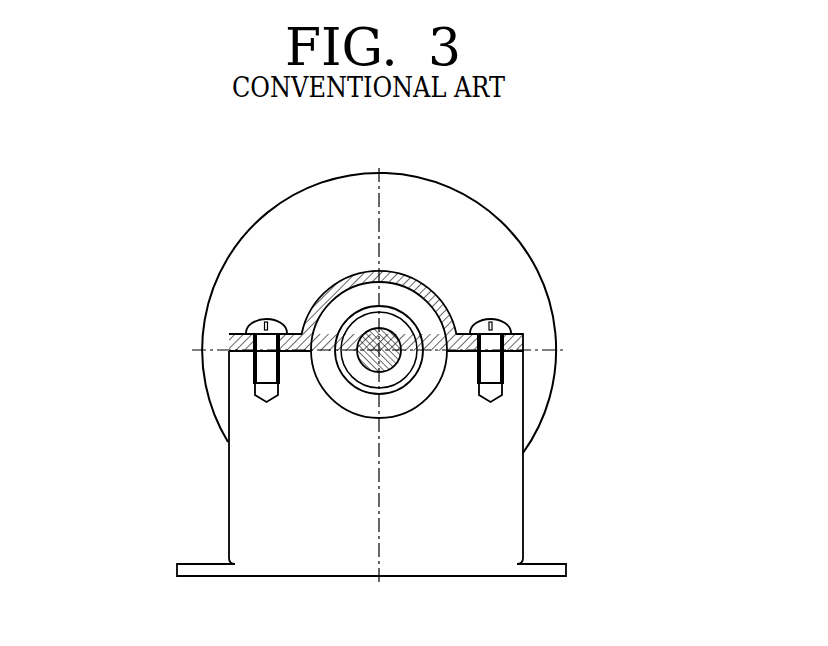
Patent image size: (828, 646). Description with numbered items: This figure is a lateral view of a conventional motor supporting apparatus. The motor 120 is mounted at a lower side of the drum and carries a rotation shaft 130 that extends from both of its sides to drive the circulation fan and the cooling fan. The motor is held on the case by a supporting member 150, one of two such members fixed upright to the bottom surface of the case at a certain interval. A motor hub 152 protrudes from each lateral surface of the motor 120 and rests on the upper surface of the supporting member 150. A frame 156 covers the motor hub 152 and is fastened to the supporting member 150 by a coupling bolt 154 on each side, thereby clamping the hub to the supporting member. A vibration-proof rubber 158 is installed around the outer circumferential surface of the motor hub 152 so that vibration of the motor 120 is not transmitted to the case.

The motor 120 is at (493, 233).
The rotation shaft 130 is at (357, 363).
The supporting member 150 is at (495, 517).
The motor hub 152 is at (390, 383).
The coupling bolt 154 is at (256, 331).
The frame 156 is at (428, 288).
The vibration-proof rubber 158 is at (365, 400).